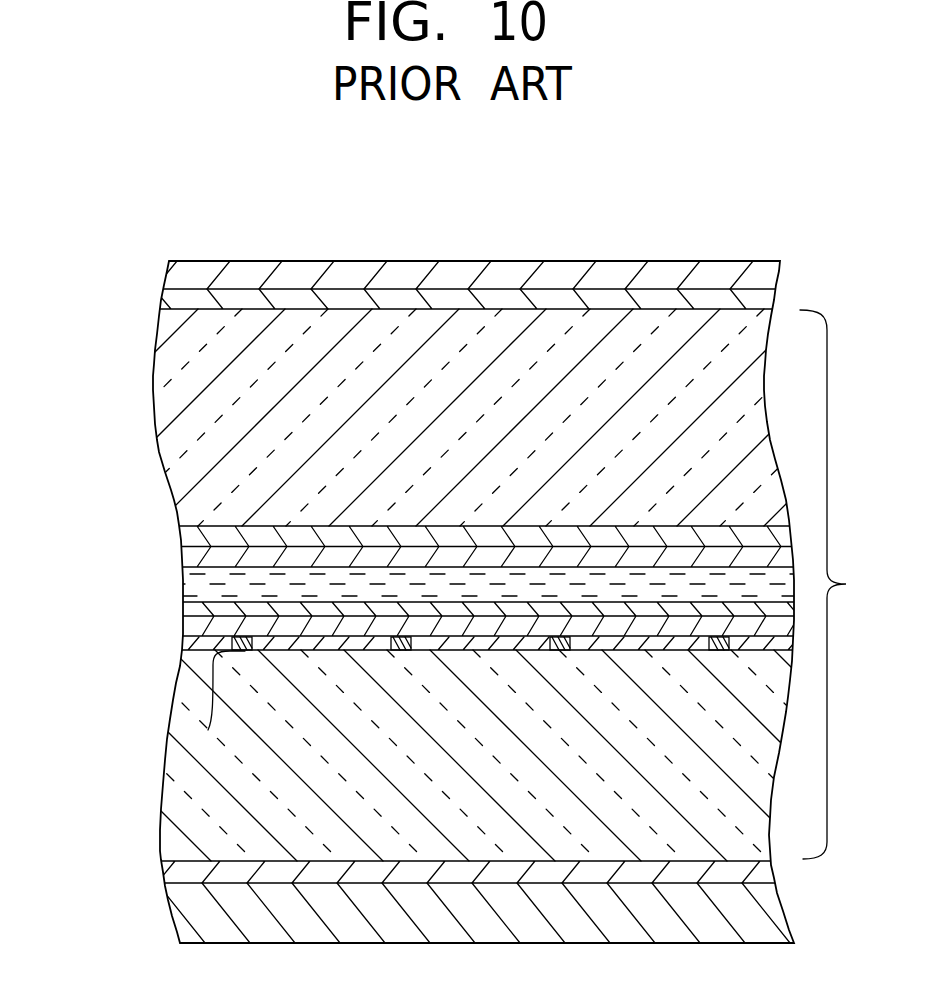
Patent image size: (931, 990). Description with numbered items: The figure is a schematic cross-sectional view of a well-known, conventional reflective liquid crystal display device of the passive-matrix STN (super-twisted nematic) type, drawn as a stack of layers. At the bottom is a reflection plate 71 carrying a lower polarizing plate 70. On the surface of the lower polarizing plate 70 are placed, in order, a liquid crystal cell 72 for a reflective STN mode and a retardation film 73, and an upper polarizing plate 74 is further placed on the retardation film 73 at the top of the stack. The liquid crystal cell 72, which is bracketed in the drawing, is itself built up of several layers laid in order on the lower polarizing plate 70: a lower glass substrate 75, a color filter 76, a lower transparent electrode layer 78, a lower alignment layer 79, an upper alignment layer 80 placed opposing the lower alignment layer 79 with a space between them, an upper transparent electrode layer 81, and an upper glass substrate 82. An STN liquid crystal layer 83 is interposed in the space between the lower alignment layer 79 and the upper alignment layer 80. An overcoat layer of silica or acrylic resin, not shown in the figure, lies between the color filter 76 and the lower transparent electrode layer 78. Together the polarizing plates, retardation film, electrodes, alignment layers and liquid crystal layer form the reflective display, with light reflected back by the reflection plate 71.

The upper polarizing plate 74 is at (178, 270).
The retardation film 73 is at (188, 301).
The upper glass substrate 82 is at (183, 404).
The upper transparent electrode layer 81 is at (192, 534).
The upper alignment layer 80 is at (186, 555).
The STN liquid crystal layer 83 is at (216, 592).
The lower alignment layer 79 is at (186, 607).
The lower transparent electrode layer 78 is at (186, 636).
The color filter 76 is at (208, 730).
The lower glass substrate 75 is at (202, 780).
The lower polarizing plate 70 is at (177, 867).
The reflection plate 71 is at (203, 920).
The liquid crystal cell 72 is at (844, 584).